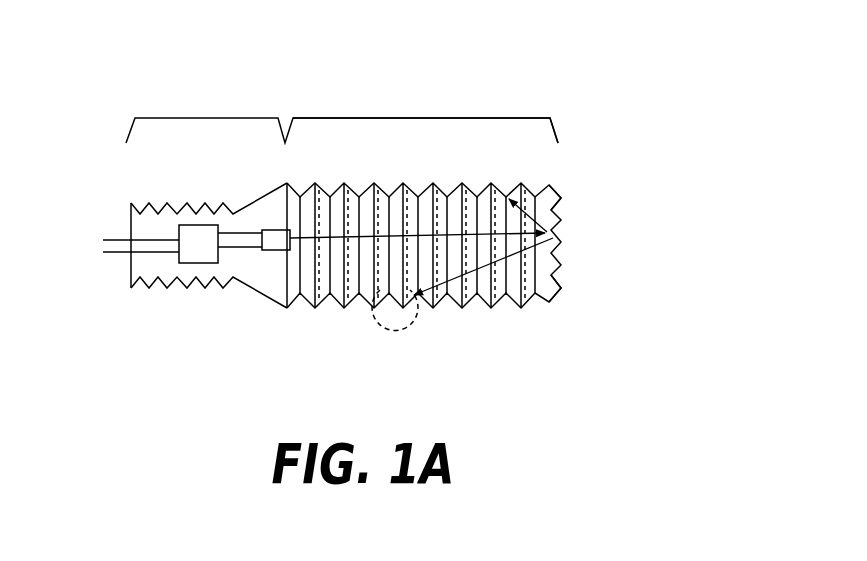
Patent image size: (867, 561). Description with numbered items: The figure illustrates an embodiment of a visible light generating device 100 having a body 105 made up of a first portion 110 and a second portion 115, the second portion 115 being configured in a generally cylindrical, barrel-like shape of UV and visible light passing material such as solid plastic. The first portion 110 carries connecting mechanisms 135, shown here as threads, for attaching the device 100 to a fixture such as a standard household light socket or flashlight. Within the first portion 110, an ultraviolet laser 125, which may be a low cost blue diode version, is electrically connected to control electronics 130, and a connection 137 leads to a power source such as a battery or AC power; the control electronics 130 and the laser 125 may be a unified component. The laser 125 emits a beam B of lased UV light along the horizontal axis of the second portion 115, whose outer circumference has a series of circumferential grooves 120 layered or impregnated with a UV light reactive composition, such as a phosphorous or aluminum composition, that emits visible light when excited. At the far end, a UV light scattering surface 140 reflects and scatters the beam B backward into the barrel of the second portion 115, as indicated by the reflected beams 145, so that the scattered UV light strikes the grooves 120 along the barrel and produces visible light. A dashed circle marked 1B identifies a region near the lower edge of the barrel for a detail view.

The visible light generating device 100 is at (645, 152).
The body 105 is at (404, 272).
The first portion 110 is at (207, 117).
The second portion 115 is at (402, 117).
The circumferential grooves 120 is at (296, 186).
The ultraviolet laser 125 is at (280, 250).
The control electronics 130 is at (197, 263).
The connecting mechanisms 135 is at (157, 204).
The connection to power source 137 is at (115, 240).
The UV light scattering surface 140 is at (560, 205).
The reflected beams 145 is at (530, 192).
The beam of lased UV light B is at (468, 230).
The detail region of FIG. 1B is at (397, 333).